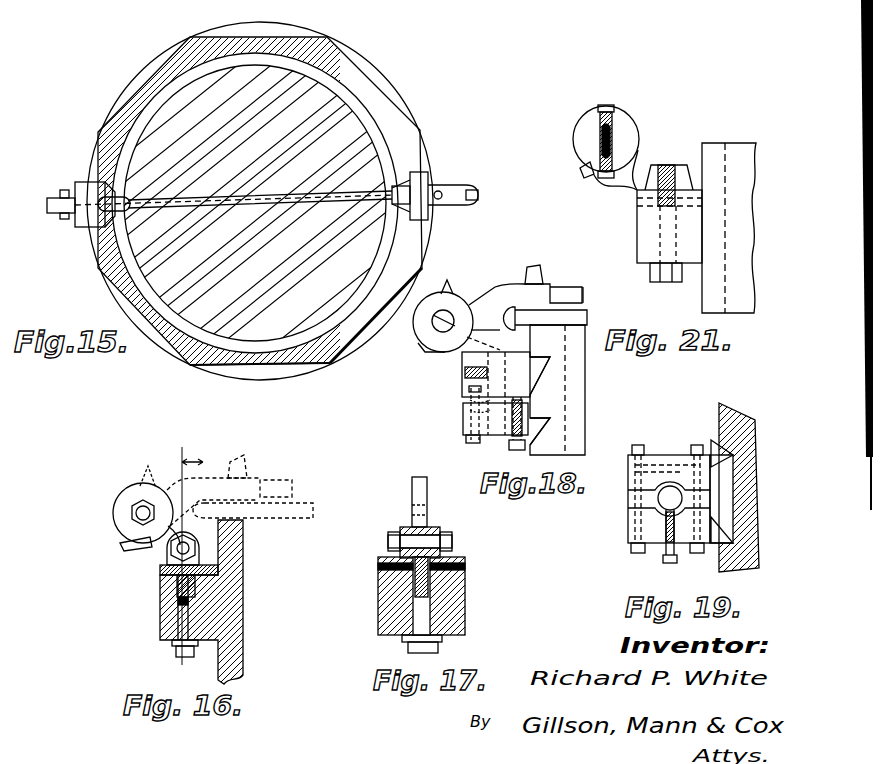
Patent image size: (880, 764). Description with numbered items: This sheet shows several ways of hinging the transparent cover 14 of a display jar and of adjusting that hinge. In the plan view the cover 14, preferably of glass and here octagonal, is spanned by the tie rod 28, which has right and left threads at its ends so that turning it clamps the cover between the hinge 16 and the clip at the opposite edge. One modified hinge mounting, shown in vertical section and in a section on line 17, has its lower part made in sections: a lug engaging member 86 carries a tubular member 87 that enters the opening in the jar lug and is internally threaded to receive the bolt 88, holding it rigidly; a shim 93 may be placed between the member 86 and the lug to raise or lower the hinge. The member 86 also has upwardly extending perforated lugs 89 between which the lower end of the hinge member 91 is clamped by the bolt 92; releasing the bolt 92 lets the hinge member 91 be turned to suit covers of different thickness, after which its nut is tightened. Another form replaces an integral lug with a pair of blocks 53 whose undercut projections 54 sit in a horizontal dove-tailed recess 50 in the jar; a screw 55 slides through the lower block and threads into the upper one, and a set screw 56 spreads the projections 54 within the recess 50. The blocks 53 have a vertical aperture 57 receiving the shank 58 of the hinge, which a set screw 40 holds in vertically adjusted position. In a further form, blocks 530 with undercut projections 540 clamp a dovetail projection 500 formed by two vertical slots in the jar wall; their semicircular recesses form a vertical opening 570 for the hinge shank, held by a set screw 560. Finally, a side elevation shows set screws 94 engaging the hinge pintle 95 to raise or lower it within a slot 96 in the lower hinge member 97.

In FIG. 18, the transparent cover 14 is at (590, 320).
In FIG. 16, the transparent cover 14 is at (313, 503).
In FIG. 15, the hinge 16 is at (50, 195).
In FIG. 18, the hinge 16 is at (415, 338).
In FIG. 16, the hinge 16 is at (112, 516).
In FIG. 16, the section line 17 is at (197, 558).
In FIG. 18, the tie rod 28 is at (568, 290).
In FIG. 16, the tie rod 28 is at (290, 483).
In FIG. 18, the set screw 40 is at (463, 370).
In FIG. 18, the dove-tailed recess 50 is at (585, 432).
In FIG. 18, the blocks 53 is at (462, 386).
In FIG. 18, the undercut projections 54 is at (540, 380).
In FIG. 18, the screw 55 is at (470, 444).
In FIG. 18, the set screw 56 is at (517, 450).
In FIG. 18, the vertical aperture 57 is at (500, 440).
In FIG. 18, the shank 58 is at (471, 418).
In FIG. 16, the lug engaging member 86 is at (162, 570).
In FIG. 17, the lug engaging member 86 is at (378, 566).
In FIG. 16, the tubular member 87 is at (175, 605).
In FIG. 17, the tubular member 87 is at (413, 590).
In FIG. 16, the bolt 88 is at (178, 642).
In FIG. 17, the bolt 88 is at (408, 645).
In FIG. 16, the perforated lugs 89 is at (170, 555).
In FIG. 17, the perforated lugs 89 is at (400, 530).
In FIG. 16, the hinge member 91 is at (122, 550).
In FIG. 17, the hinge member 91 is at (412, 522).
In FIG. 16, the bolt 92 is at (198, 547).
In FIG. 17, the bolt 92 is at (388, 540).
In FIG. 16, the shim 93 is at (175, 585).
In FIG. 21, the set screws 94 is at (610, 107).
In FIG. 21, the hinge pintle 95 is at (614, 139).
In FIG. 21, the slot 96 is at (612, 128).
In FIG. 21, the lower hinge member 97 is at (578, 150).
In FIG. 19, the dovetail projection 500 is at (750, 470).
In FIG. 19, the blocks 530 is at (668, 442).
In FIG. 19, the undercut projections 540 is at (718, 445).
In FIG. 19, the set screw 560 is at (665, 562).
In FIG. 19, the vertical opening 570 is at (628, 521).